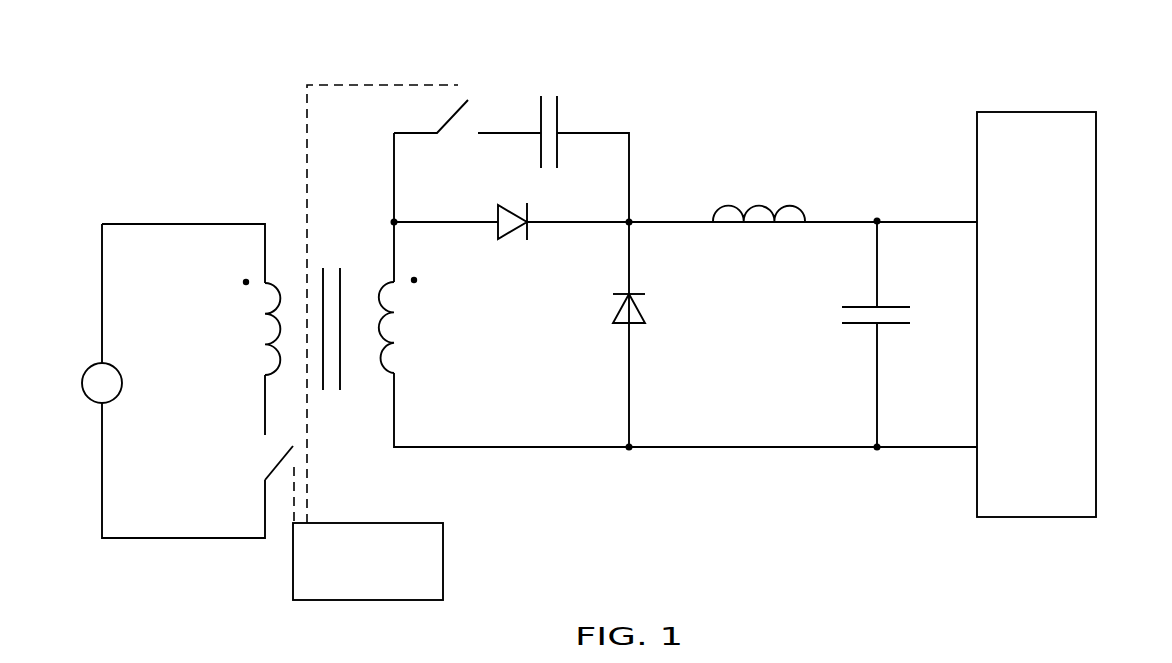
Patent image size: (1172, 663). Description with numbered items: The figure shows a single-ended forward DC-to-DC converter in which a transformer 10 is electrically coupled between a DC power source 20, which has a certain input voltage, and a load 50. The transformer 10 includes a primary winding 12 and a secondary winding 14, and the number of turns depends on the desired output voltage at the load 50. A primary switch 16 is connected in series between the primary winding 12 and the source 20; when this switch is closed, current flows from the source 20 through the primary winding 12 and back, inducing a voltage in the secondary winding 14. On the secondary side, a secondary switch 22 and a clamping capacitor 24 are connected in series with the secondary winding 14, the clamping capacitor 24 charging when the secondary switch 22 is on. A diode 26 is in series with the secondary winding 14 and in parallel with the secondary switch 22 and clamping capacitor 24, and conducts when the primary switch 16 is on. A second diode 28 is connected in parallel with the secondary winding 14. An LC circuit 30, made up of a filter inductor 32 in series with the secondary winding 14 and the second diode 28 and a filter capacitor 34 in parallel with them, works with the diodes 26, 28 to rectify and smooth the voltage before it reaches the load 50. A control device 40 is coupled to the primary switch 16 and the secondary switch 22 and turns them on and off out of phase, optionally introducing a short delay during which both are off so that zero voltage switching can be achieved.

The transformer 10 is at (282, 224).
The primary winding 12 is at (243, 325).
The secondary winding 14 is at (397, 312).
The primary switch 16 is at (258, 435).
The DC power source 20 is at (92, 368).
The secondary switch 22 is at (478, 65).
The clamping capacitor 24 is at (558, 132).
The diode 26 is at (507, 205).
The second diode 28 is at (635, 294).
The LC circuit 30 is at (864, 196).
The filter inductor 32 is at (727, 204).
The filter capacitor 34 is at (878, 306).
The control device 40 is at (365, 523).
The load 50 is at (1096, 222).